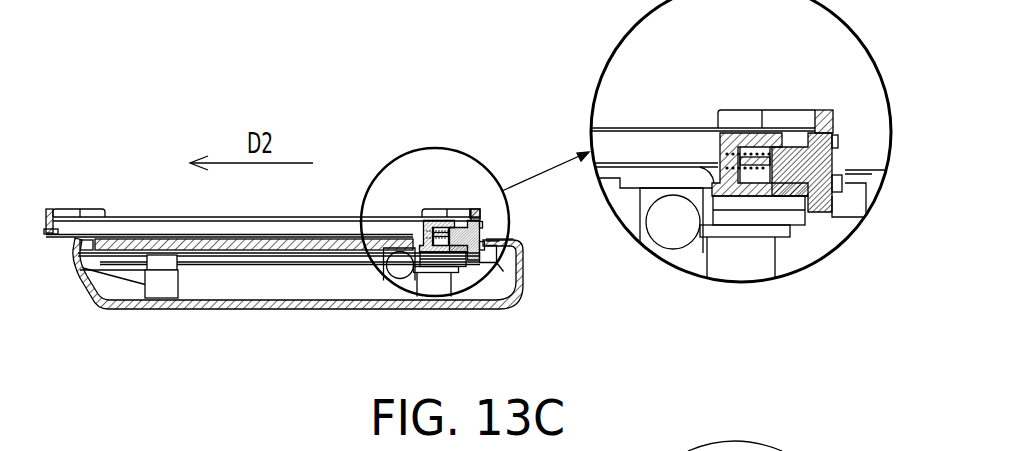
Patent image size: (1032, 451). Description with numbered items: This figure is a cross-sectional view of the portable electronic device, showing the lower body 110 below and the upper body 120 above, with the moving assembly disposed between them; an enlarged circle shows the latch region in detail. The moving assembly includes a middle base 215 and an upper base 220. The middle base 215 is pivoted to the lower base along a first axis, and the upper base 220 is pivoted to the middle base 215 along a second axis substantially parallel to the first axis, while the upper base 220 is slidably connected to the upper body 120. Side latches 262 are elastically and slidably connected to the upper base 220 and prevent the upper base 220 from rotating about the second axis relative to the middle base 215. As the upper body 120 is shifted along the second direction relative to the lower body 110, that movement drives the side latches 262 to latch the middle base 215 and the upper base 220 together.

The lower body 110 is at (138, 310).
The upper body 120 is at (132, 226).
The middle base 215 is at (758, 198).
The upper base 220 is at (748, 137).
The side latch 262 is at (829, 110).